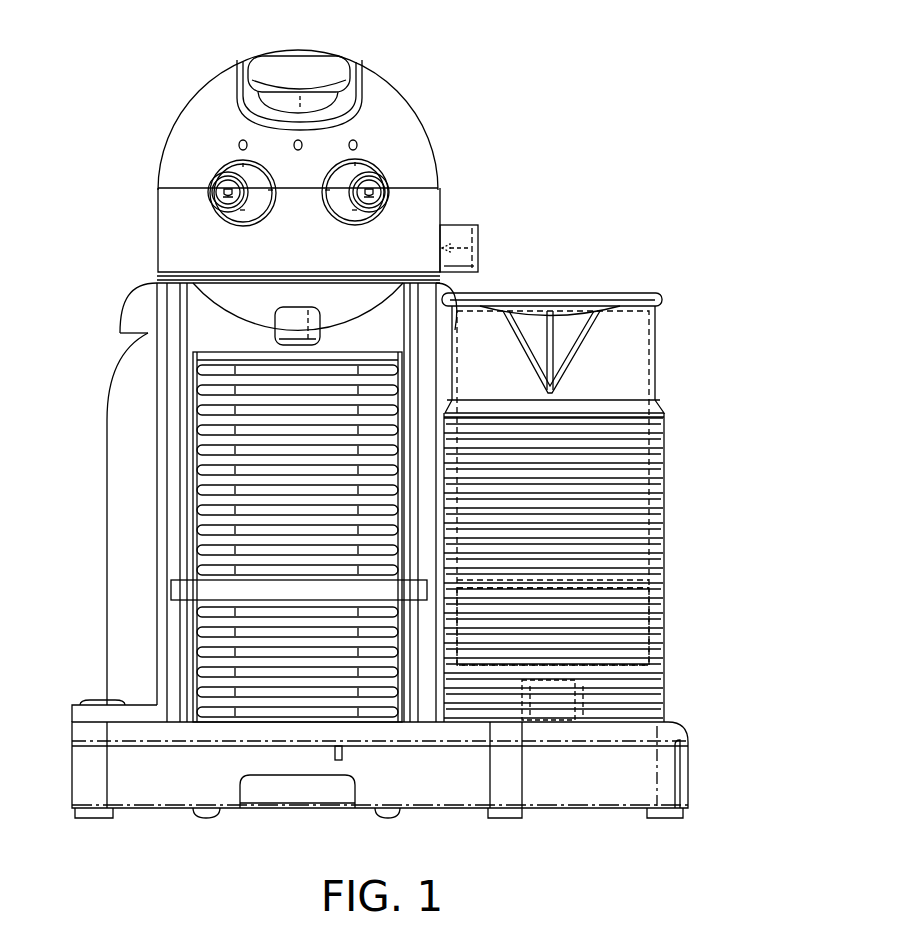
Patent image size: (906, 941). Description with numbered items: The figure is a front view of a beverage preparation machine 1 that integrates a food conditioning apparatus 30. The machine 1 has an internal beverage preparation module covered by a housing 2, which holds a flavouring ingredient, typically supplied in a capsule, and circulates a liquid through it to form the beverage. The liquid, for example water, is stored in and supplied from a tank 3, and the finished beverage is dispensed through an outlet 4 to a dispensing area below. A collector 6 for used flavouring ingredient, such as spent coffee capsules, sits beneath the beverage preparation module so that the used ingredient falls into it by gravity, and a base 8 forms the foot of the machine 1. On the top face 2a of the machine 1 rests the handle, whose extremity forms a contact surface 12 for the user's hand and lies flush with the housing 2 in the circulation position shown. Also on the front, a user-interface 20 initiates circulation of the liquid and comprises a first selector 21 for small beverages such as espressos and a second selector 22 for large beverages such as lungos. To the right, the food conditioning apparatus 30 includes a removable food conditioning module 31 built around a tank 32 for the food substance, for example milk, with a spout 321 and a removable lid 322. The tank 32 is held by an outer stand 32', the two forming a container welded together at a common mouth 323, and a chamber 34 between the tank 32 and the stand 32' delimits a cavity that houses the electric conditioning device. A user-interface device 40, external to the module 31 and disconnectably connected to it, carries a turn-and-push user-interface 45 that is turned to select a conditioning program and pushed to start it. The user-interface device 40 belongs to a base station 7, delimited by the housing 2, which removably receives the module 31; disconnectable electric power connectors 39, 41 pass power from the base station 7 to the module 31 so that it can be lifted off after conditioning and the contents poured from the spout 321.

The beverage preparation machine 1 is at (690, 42).
The housing 2 is at (157, 253).
The top face 2a is at (396, 84).
The tank 3 is at (136, 305).
The outlet 4 is at (280, 328).
The collector 6 is at (225, 425).
The base station 7 is at (106, 630).
The base 8 is at (620, 805).
The contact surface 12 is at (300, 67).
The user-interface 20 is at (206, 171).
The first selector 21 is at (222, 201).
The second selector 22 is at (380, 201).
The food conditioning apparatus 30 is at (635, 206).
The food conditioning module 31 is at (665, 461).
The tank 32 is at (602, 558).
The outer stand 32' is at (582, 549).
The chamber 34 is at (657, 637).
The electric power connector 39 is at (590, 688).
The user-interface device 40 is at (489, 212).
The electric power connector 41 is at (585, 716).
The user-interface 45 is at (479, 259).
The spout 321 is at (563, 338).
The removable lid 322 is at (628, 293).
The common mouth 323 is at (657, 312).